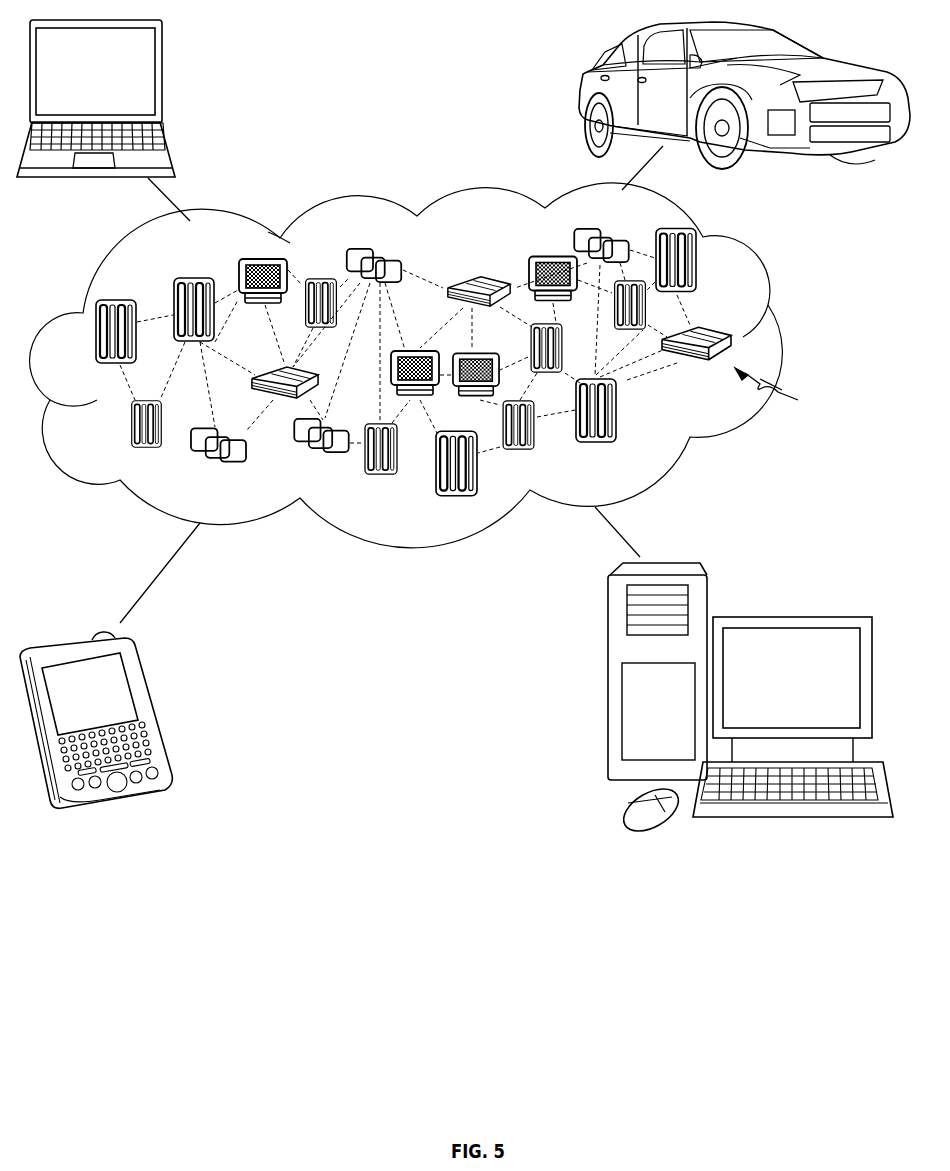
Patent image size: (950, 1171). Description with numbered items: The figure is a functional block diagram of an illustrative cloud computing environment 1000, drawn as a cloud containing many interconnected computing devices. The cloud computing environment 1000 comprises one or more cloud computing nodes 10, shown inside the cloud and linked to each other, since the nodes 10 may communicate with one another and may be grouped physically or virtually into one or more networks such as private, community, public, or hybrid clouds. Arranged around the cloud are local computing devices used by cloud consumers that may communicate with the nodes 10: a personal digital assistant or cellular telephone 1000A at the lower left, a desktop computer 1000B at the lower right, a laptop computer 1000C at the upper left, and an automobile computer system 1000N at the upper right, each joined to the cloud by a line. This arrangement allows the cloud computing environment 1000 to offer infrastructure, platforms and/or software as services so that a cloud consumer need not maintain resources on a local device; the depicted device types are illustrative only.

The laptop computer 1000C is at (160, 80).
The automobile computer system 1000N is at (578, 95).
The personal digital assistant (PDA) or cellular telephone 1000A is at (153, 707).
The desktop computer 1000B is at (800, 596).
The cloud computing environment 1000 is at (790, 342).
The cloud computing nodes 10 is at (782, 391).